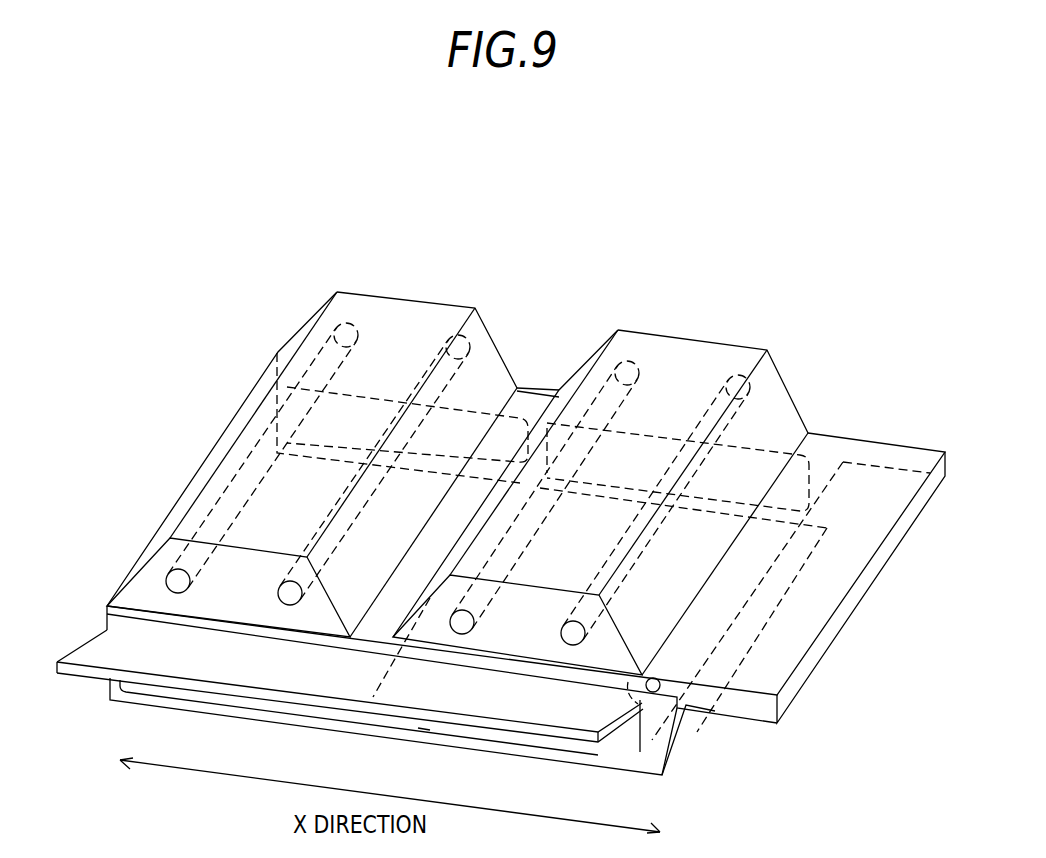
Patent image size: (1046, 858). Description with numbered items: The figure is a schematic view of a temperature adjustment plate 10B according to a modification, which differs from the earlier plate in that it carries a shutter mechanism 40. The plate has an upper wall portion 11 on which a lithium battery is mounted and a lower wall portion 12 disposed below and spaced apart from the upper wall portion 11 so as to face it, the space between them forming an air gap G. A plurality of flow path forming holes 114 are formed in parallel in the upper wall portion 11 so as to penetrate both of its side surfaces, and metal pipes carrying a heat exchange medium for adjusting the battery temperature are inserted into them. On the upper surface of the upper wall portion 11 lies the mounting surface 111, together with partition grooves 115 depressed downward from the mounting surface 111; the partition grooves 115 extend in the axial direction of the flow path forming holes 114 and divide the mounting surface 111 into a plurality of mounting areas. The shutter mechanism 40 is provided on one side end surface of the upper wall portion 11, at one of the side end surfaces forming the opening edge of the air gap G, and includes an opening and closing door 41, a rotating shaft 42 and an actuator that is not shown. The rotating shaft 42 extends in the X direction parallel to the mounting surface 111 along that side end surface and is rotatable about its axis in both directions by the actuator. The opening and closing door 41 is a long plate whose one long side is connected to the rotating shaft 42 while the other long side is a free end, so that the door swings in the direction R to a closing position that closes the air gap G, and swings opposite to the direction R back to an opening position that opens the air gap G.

The temperature adjustment plate 10B is at (843, 352).
The upper wall portion 11 is at (756, 702).
The lower wall portion 12 is at (519, 746).
The shutter mechanism 40 is at (105, 627).
The opening and closing door 41 is at (90, 652).
The rotating shaft 42 is at (640, 694).
The mounting surface 111 is at (403, 308).
The flow path forming hole 114 is at (168, 582).
The partition groove 115 is at (543, 398).
The air gap G is at (423, 726).
The direction R is at (619, 728).